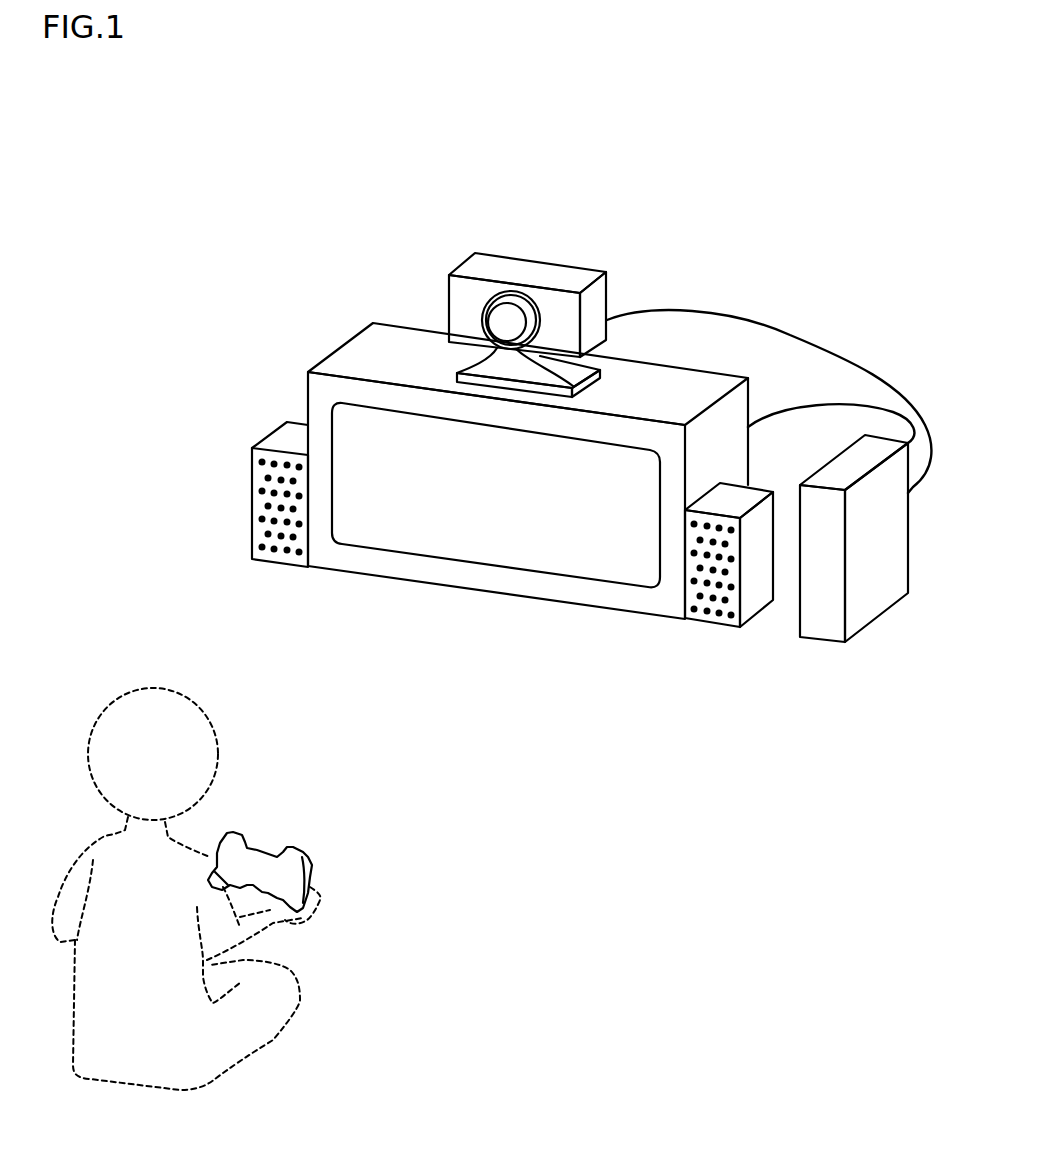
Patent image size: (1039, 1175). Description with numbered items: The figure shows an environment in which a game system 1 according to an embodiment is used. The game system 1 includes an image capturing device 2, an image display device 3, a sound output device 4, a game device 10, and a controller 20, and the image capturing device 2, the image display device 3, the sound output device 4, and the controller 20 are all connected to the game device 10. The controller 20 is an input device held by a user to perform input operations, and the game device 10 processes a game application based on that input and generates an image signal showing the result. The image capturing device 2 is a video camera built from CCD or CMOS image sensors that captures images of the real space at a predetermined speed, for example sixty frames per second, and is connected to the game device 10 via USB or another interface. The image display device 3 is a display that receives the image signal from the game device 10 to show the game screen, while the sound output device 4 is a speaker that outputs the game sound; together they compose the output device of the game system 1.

The game system 1 is at (742, 205).
The image capturing device 2 is at (527, 273).
The image display device 3 is at (497, 593).
The sound output device 4 is at (280, 563).
The game device 10 is at (822, 642).
The controller 20 is at (312, 867).